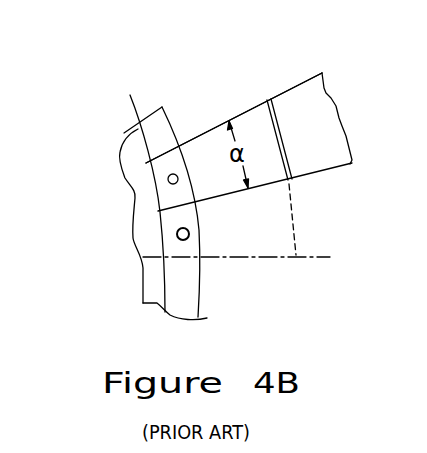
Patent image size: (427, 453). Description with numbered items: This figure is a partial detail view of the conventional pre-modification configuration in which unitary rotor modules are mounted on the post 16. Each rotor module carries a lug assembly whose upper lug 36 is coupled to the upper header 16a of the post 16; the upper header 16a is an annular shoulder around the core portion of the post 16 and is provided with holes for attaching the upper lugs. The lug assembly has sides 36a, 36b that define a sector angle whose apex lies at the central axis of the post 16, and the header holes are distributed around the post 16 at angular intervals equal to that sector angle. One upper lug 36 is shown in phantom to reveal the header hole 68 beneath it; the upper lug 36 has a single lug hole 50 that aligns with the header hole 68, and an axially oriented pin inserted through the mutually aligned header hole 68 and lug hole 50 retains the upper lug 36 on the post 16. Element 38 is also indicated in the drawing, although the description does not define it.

The post 16 is at (124, 148).
The upper header 16a is at (148, 128).
The upper lug 36 is at (212, 147).
The side of lug assembly 36a is at (271, 180).
The side of lug assembly 36b is at (253, 108).
The weld / joint 38 is at (333, 165).
The lug hole 50 is at (168, 182).
The header hole 68 is at (177, 238).